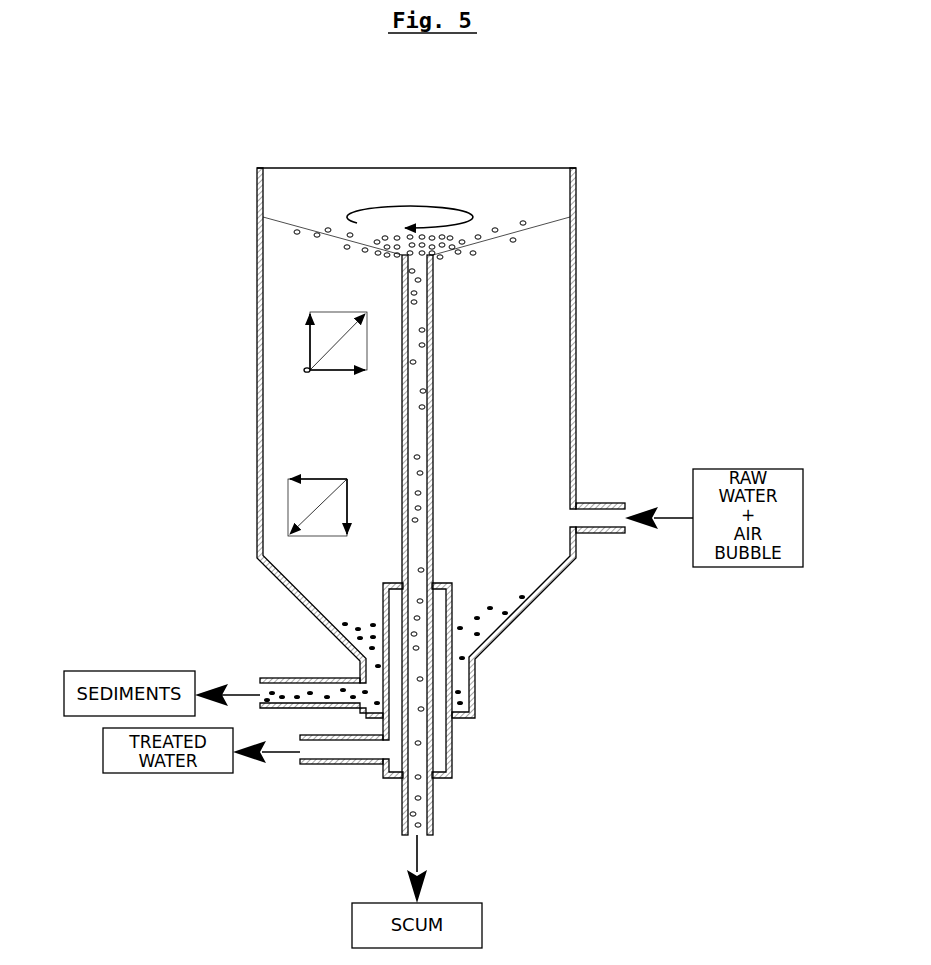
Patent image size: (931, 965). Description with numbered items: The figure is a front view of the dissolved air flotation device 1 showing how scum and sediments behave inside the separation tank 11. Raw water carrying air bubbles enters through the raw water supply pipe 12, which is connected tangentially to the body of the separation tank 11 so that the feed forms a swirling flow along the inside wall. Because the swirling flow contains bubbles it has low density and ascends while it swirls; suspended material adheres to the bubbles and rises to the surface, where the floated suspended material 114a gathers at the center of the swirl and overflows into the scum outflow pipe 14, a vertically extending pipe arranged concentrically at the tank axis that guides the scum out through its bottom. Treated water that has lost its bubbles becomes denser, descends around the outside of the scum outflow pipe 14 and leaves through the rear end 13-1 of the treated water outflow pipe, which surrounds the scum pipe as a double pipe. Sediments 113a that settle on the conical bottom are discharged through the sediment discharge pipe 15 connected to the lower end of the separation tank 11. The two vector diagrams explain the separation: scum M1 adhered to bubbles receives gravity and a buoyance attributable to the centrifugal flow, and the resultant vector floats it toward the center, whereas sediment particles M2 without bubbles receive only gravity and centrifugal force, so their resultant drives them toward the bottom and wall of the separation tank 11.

The dissolved air flotation device 1 is at (418, 160).
The separation tank 11 is at (578, 266).
The raw water supply pipe 12 is at (598, 503).
The rear end of the treated water outflow pipe 13-1 is at (323, 771).
The scum outflow pipe 14 is at (433, 388).
The sediment discharge pipe 15 is at (283, 678).
The sediments 113a is at (485, 620).
The floated suspended material 114a is at (292, 233).
The scum M1 is at (303, 368).
The sediment particles M2 is at (345, 476).